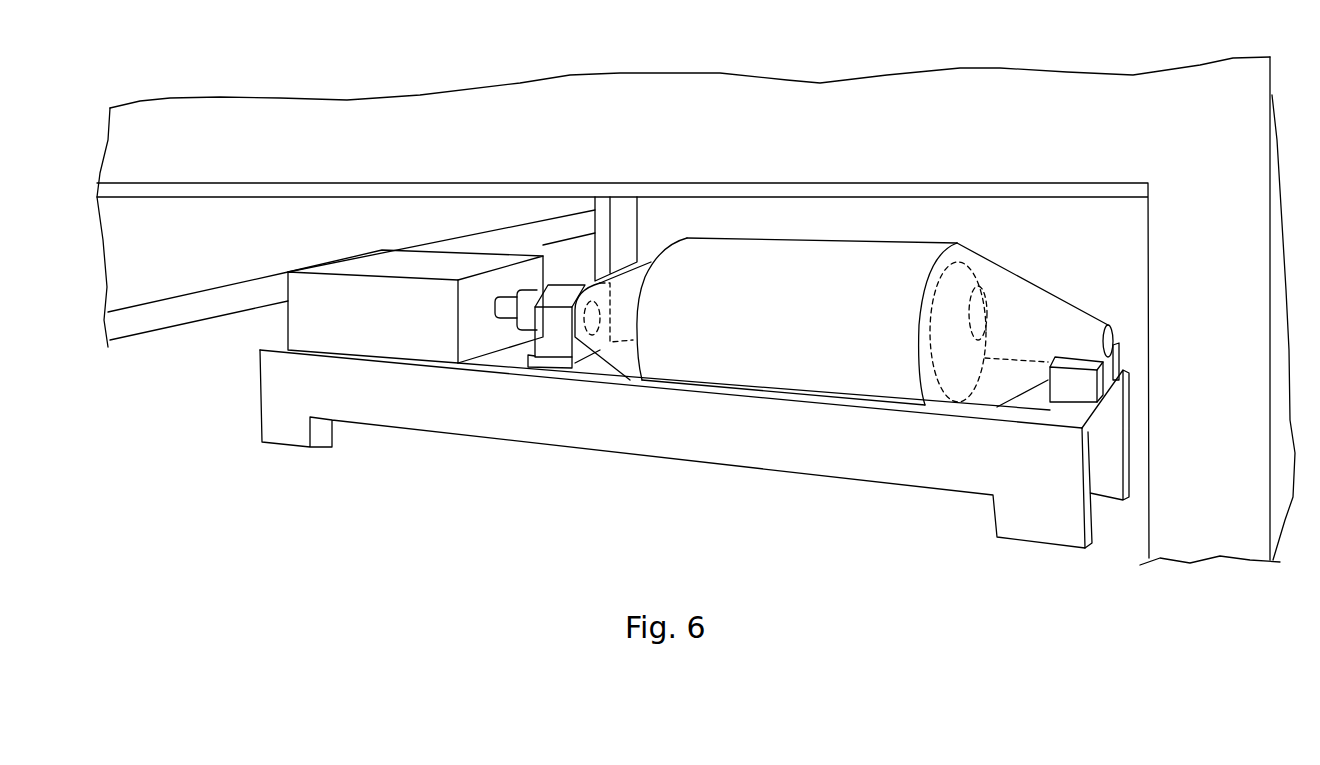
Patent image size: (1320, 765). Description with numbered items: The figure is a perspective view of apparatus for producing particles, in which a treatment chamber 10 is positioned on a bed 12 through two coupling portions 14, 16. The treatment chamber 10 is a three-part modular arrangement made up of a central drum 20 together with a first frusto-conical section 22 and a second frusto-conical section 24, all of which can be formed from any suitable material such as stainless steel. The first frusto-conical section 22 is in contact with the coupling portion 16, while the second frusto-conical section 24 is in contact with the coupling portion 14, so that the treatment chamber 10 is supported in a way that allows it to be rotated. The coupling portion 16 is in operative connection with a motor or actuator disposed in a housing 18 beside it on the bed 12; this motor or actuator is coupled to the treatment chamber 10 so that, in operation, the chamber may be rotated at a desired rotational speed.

The treatment chamber 10 is at (934, 231).
The bed 12 is at (460, 441).
The coupling portion 14 is at (1070, 375).
The coupling portion 16 is at (551, 318).
The housing 18 is at (293, 317).
The central drum 20 is at (783, 267).
The first frusto-conical section 22 is at (642, 272).
The second frusto-conical section 24 is at (1027, 298).